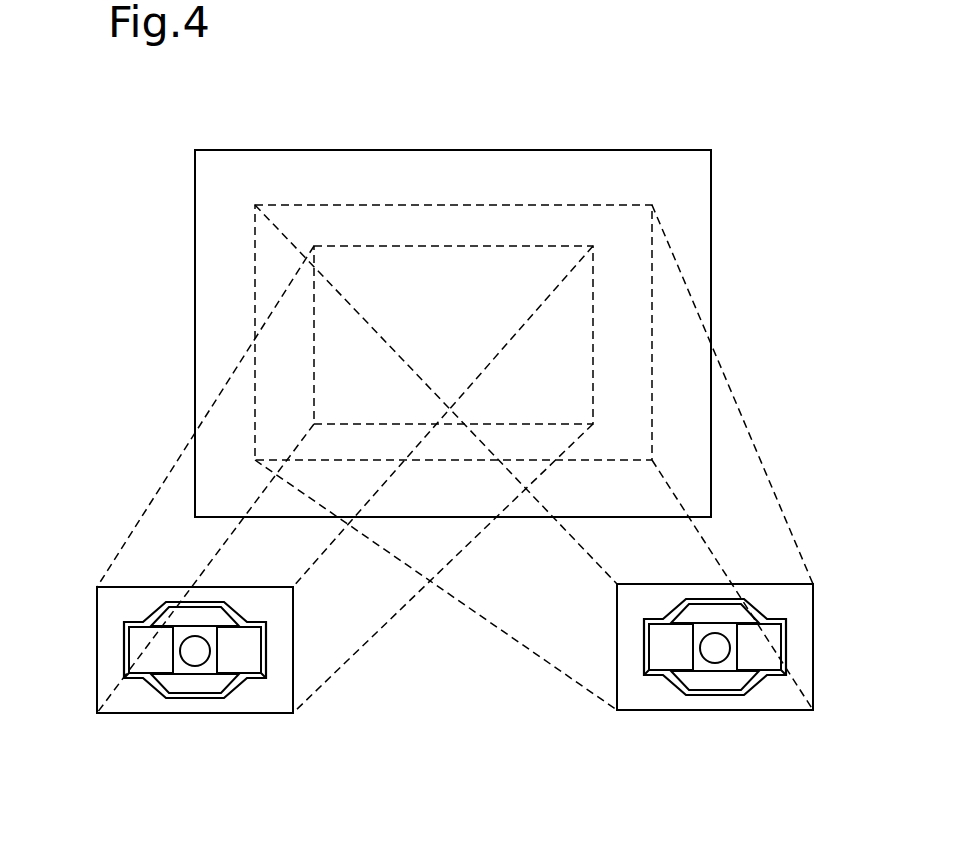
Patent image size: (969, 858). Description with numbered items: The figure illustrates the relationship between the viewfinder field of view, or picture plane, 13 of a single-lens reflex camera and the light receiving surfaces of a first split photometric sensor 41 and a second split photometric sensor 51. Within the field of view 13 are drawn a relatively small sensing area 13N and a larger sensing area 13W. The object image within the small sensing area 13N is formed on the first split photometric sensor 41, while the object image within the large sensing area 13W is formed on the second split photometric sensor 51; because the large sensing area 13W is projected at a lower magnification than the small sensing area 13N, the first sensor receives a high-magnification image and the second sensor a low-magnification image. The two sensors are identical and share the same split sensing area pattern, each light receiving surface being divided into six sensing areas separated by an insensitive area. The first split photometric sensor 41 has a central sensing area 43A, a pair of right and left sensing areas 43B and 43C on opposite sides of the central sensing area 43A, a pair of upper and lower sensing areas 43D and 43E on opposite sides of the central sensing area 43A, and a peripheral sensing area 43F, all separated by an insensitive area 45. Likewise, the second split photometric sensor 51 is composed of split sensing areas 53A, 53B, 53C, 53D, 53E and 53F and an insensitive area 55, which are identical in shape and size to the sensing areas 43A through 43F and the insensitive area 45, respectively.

The field of view 13 is at (468, 150).
The small sensing area 13N is at (380, 246).
The large sensing area 13W is at (558, 205).
The first split photometric sensor 41 is at (97, 615).
The insensitive area 45 is at (127, 622).
The central sensing area 43A is at (190, 657).
The left sensing area 43B is at (138, 643).
The right sensing area 43C is at (253, 642).
The upper sensing area 43D is at (210, 613).
The lower sensing area 43E is at (207, 687).
The peripheral sensing area 43F is at (250, 700).
The second split photometric sensor 51 is at (813, 637).
The insensitive area 55 is at (786, 619).
The central sensing area 53A is at (710, 648).
The left sensing area 53B is at (658, 645).
The right sensing area 53C is at (775, 645).
The upper sensing area 53D is at (702, 610).
The lower sensing area 53E is at (723, 680).
The peripheral sensing area 53F is at (773, 702).